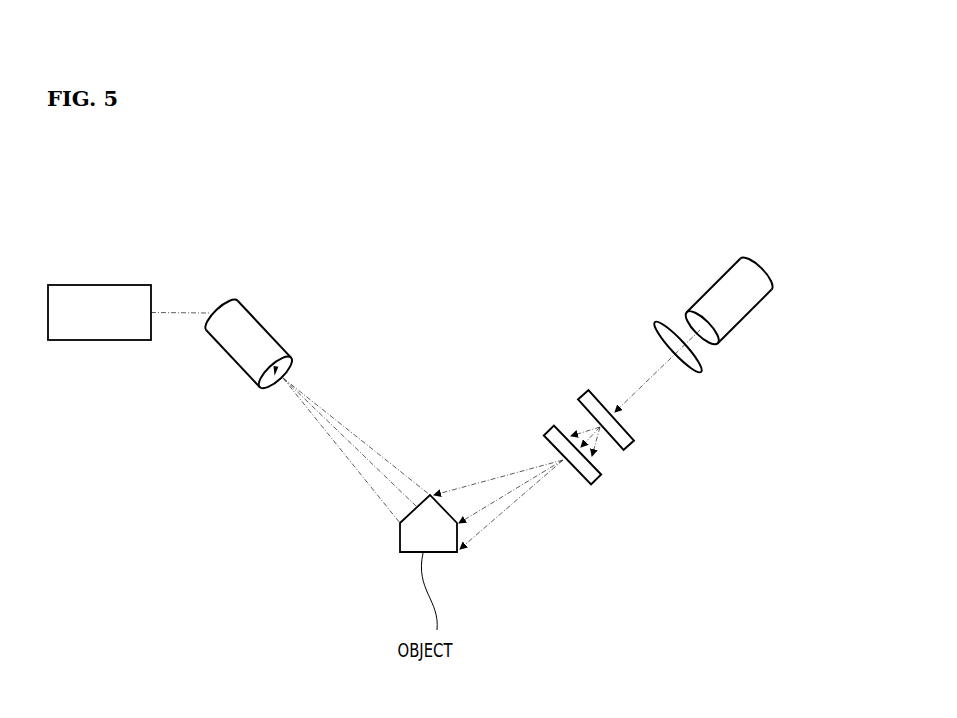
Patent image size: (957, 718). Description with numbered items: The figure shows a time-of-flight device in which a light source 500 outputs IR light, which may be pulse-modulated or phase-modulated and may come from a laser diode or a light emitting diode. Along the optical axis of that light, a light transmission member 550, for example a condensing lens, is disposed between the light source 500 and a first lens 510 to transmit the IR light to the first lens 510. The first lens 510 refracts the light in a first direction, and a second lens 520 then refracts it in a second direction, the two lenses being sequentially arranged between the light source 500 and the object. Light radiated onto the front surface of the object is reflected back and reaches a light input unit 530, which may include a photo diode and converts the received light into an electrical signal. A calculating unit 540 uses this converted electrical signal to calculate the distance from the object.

The light source 500 is at (755, 268).
The first lens 510 is at (585, 387).
The second lens 520 is at (555, 426).
The light input unit 530 is at (263, 323).
The calculating unit 540 is at (88, 285).
The light transmission member 550 is at (665, 322).